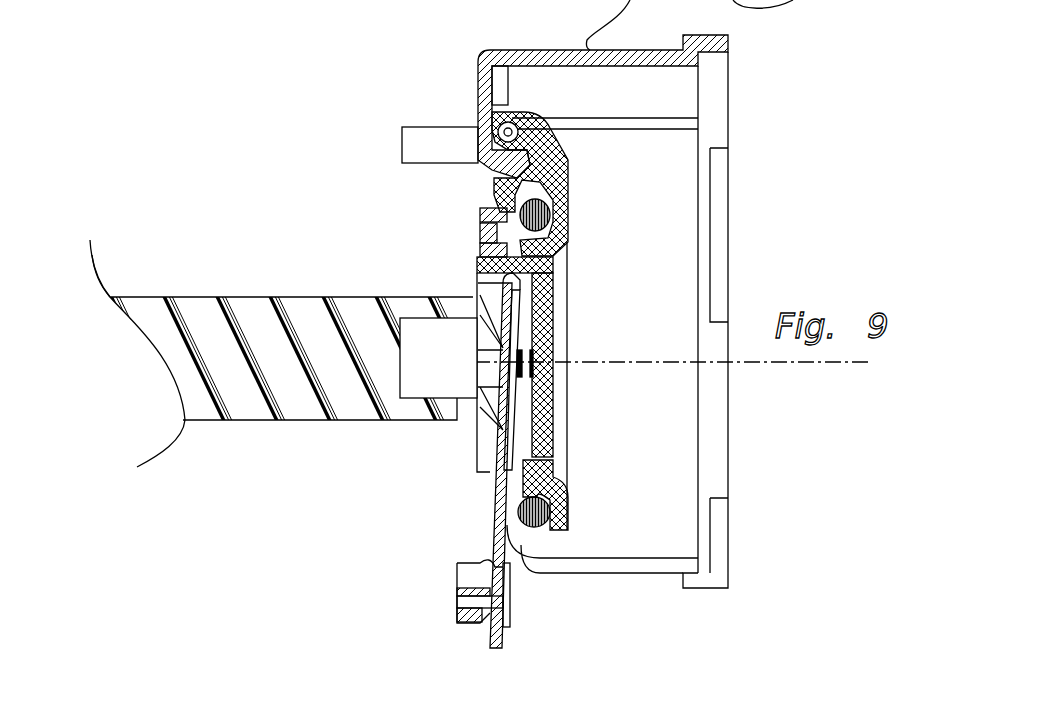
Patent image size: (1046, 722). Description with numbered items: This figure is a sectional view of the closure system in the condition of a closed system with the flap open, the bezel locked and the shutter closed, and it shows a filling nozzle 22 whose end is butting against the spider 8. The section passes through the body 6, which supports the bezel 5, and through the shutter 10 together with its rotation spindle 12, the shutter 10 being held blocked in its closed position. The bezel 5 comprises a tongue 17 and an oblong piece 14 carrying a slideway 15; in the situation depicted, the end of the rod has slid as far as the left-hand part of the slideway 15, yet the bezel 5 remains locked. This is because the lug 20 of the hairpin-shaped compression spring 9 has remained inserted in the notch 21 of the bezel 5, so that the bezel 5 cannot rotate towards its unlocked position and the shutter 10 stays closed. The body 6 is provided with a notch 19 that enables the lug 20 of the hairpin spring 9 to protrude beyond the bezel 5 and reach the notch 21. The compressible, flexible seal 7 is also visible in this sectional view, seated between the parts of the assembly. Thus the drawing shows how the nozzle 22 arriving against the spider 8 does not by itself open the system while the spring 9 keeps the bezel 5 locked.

The bezel 5 is at (480, 210).
The body 6 is at (617, 568).
The compressible seal 7 is at (573, 242).
The spider 8 is at (487, 367).
The compression spring 9 is at (548, 297).
The shutter 10 is at (568, 195).
The rotation spindle 12 is at (477, 108).
The oblong piece 14 is at (477, 622).
The slideway 15 is at (470, 600).
The tongue 17 is at (503, 628).
The notch 19 is at (540, 475).
The lug 20 is at (492, 497).
The notch 21 is at (495, 512).
The filling nozzle 22 is at (250, 398).